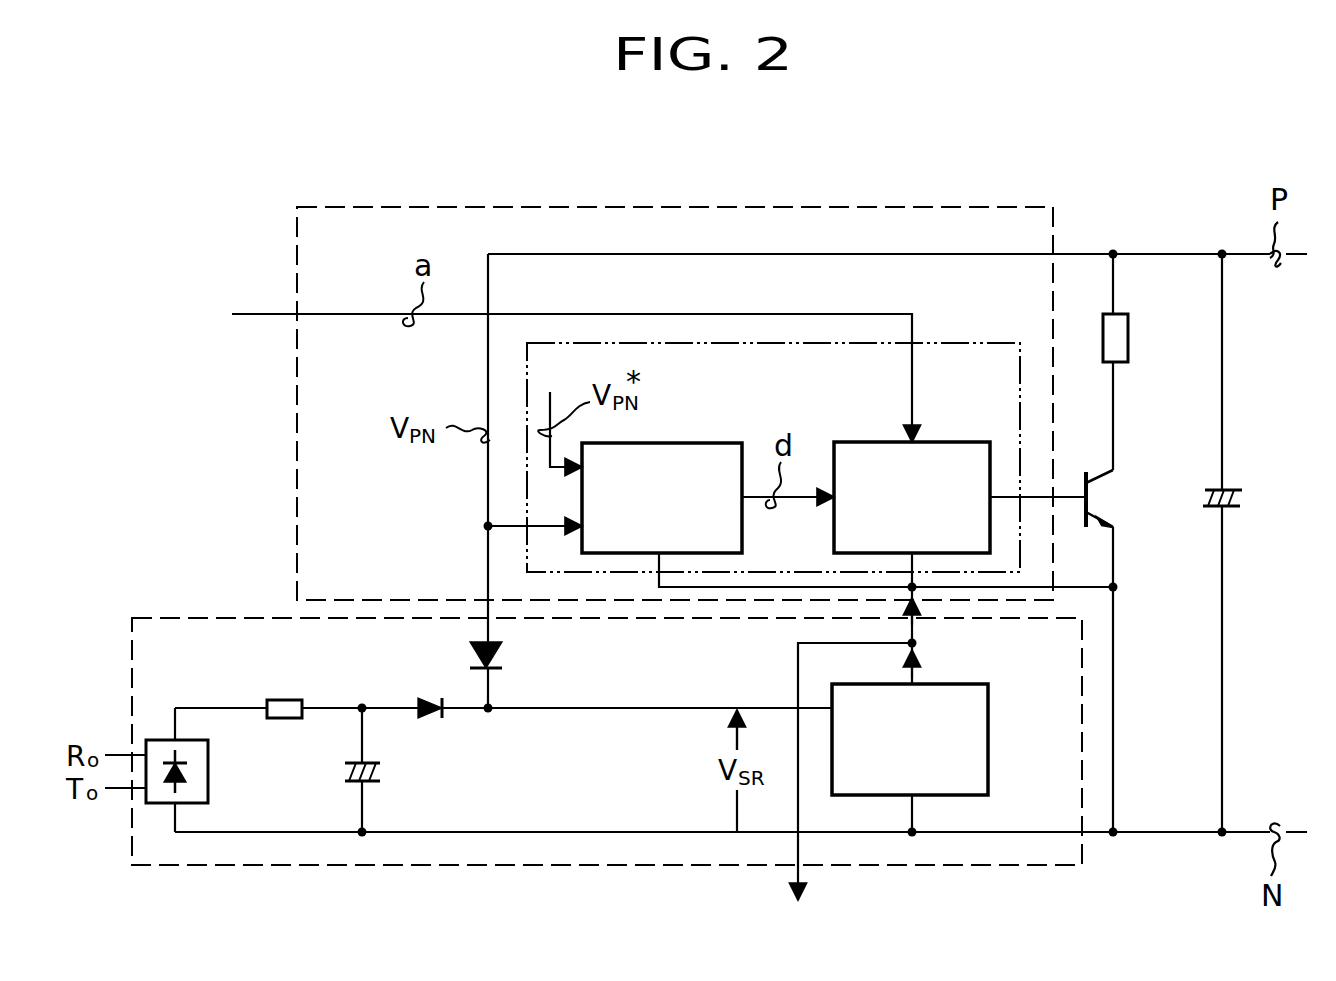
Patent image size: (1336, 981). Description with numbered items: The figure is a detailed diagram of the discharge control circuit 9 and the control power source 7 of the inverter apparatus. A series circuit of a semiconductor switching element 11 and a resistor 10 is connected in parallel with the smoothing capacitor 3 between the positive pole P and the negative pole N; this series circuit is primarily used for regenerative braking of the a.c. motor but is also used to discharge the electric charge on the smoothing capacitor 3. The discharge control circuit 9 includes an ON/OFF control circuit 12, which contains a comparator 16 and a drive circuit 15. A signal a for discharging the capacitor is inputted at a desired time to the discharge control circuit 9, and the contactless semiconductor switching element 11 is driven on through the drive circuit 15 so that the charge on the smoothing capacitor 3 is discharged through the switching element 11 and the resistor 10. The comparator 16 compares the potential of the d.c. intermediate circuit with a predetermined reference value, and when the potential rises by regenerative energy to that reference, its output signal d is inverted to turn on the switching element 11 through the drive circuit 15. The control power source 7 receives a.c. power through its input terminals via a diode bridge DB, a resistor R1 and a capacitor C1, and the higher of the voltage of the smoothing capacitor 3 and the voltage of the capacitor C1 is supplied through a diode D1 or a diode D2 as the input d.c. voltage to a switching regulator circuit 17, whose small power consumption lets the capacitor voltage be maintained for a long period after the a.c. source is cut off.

The smoothing capacitor 3 is at (1248, 496).
The control power source 7 is at (940, 866).
The discharge control circuit 9 is at (988, 207).
The resistor 10 is at (1128, 338).
The semiconductor switching element 11 is at (1106, 497).
The ON/OFF control circuit 12 is at (983, 343).
The drive circuit 15 is at (966, 442).
The comparator 16 is at (716, 443).
The switching regulator circuit 17 is at (990, 722).
The diode bridge DB is at (210, 779).
The resistor R1 is at (291, 700).
The capacitor C1 is at (382, 774).
The diode D1 is at (505, 657).
The diode D2 is at (428, 722).